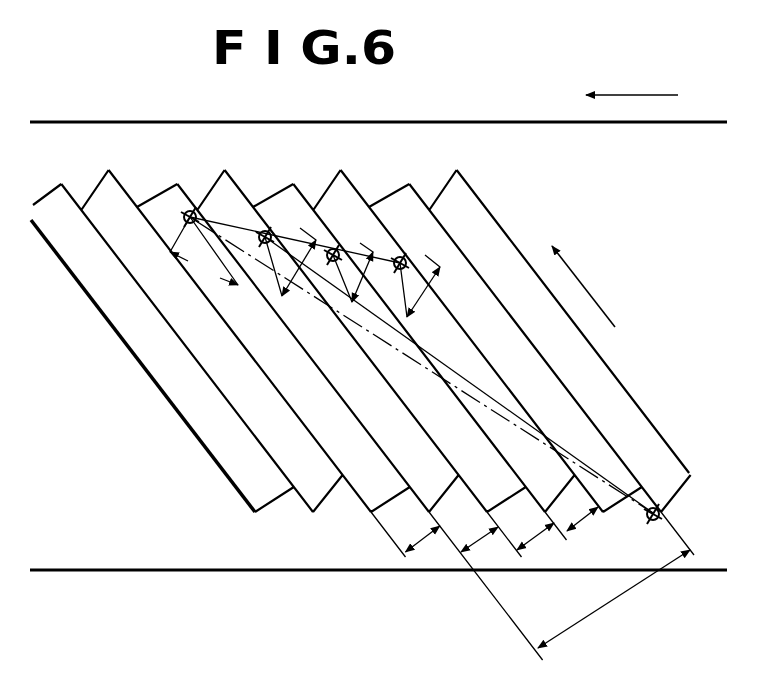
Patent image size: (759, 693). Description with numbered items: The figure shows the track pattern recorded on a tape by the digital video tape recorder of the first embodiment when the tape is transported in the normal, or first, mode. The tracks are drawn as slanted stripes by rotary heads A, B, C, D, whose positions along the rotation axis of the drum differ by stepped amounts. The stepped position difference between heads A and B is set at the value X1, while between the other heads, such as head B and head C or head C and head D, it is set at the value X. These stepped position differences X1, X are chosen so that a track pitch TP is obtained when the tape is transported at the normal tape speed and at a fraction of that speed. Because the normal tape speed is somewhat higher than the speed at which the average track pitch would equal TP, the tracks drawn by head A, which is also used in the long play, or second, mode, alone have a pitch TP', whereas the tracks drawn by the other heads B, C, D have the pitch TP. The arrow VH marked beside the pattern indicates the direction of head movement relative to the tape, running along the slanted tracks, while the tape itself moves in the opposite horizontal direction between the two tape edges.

The head A is at (189, 209).
The head B is at (262, 229).
The head C is at (330, 247).
The head D is at (397, 255).
The stepped position difference X1 is at (300, 292).
The stepped position difference X is at (352, 302).
The track pitch TP is at (501, 534).
The track pitch TP' is at (476, 531).
The head speed VH is at (585, 286).